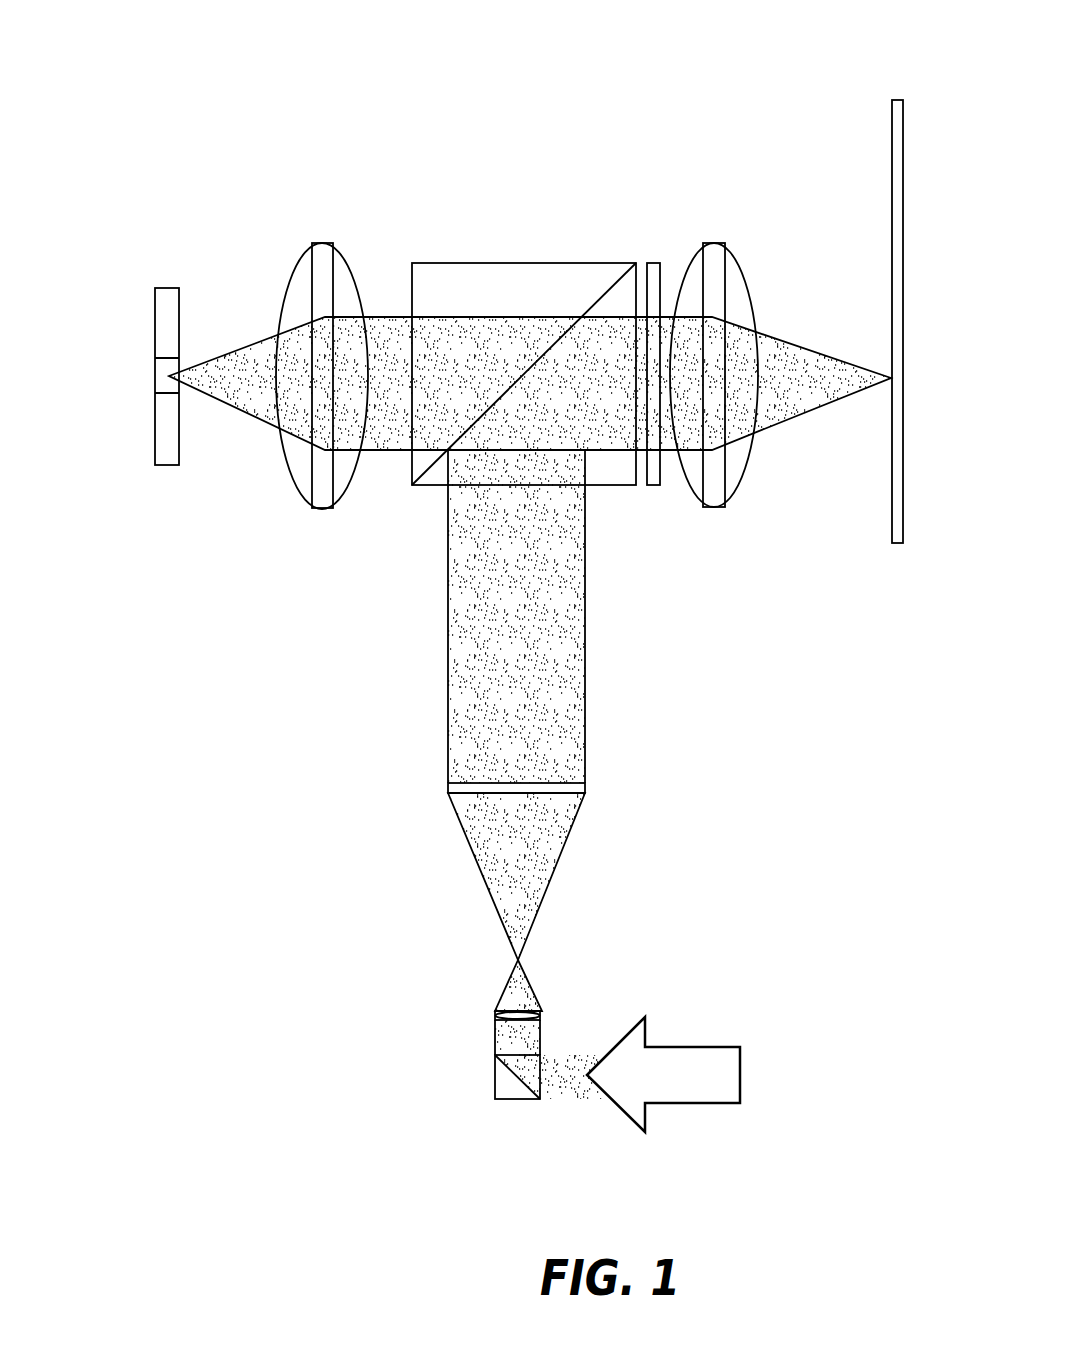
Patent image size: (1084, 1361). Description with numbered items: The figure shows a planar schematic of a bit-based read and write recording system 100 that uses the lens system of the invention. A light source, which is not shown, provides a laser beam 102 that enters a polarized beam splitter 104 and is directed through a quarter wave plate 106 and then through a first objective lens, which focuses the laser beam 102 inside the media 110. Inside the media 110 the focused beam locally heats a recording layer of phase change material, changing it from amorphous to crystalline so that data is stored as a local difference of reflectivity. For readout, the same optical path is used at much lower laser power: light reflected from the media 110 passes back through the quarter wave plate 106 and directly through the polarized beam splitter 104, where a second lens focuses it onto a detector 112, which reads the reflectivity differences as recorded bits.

The bit-based recording system 100 is at (168, 123).
The laser beam 102 is at (683, 1047).
The polarized beam splitter 104 is at (432, 263).
The quarter wave plate 106 is at (650, 263).
The media 110 is at (897, 100).
The detector 112 is at (165, 288).